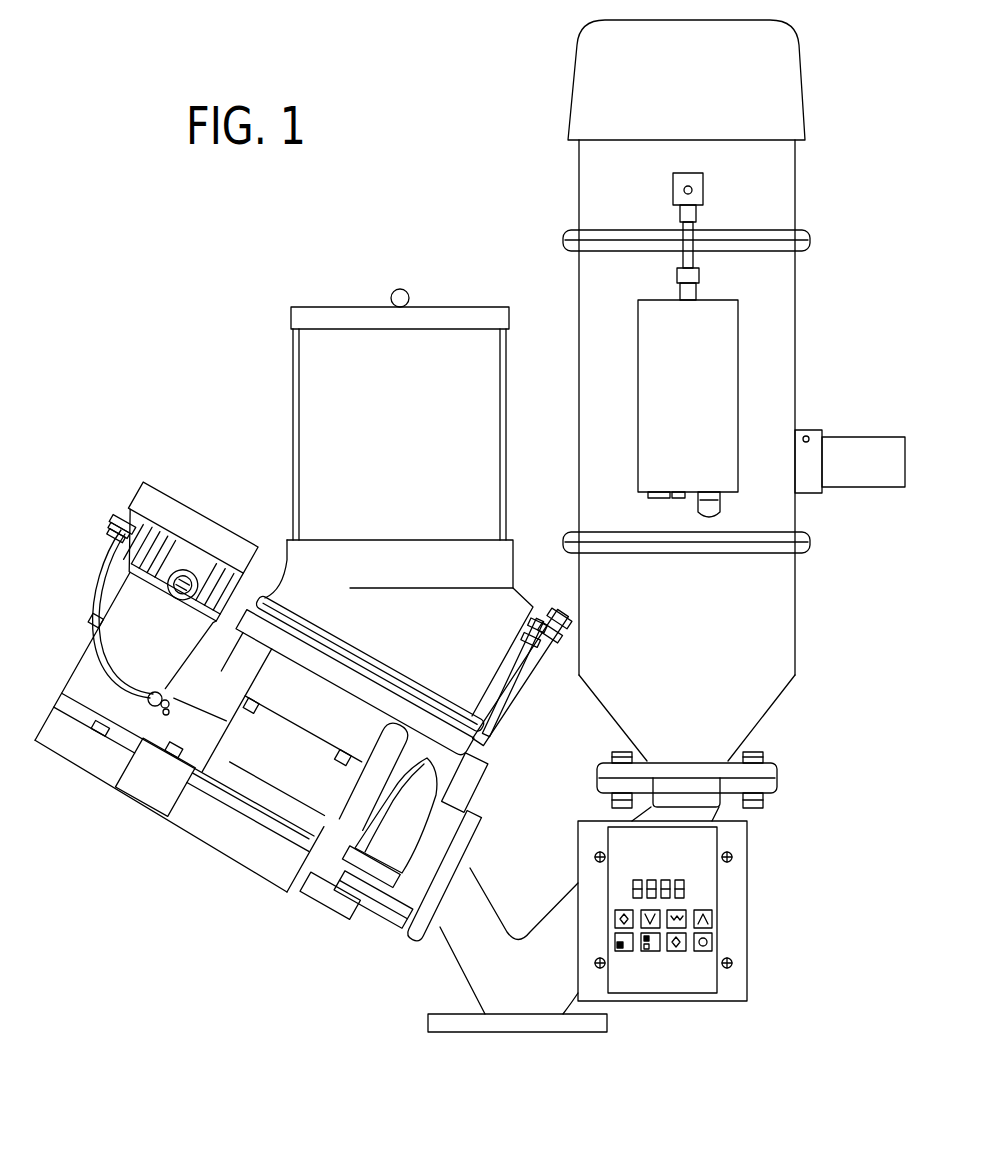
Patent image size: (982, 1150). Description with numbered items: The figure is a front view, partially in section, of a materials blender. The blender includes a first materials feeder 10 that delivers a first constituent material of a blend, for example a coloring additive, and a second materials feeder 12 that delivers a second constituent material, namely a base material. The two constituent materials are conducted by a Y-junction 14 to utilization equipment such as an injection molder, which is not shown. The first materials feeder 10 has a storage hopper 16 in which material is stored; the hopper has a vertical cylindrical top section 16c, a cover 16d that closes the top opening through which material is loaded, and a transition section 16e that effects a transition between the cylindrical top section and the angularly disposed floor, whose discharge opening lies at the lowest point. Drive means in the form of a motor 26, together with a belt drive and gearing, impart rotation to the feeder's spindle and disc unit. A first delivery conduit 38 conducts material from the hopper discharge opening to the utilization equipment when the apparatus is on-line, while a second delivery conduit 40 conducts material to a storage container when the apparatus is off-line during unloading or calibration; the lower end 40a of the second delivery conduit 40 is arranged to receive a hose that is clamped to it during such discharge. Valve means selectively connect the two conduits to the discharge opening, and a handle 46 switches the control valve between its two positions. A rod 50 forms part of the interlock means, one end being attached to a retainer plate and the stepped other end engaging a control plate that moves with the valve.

The first materials feeder 10 is at (205, 455).
The second materials feeder 12 is at (815, 338).
The Y-junction 14 is at (532, 937).
The storage hopper 16 is at (297, 392).
The vertical cylindrical top section 16c is at (508, 366).
The cover 16d is at (464, 307).
The transition section 16e is at (283, 563).
The motor 26 is at (76, 662).
The first delivery conduit 38 is at (462, 966).
The second delivery conduit 40 is at (397, 850).
The lower end of delivery conduit 40a is at (350, 922).
The handle 46 is at (320, 898).
The rod 50 is at (512, 713).